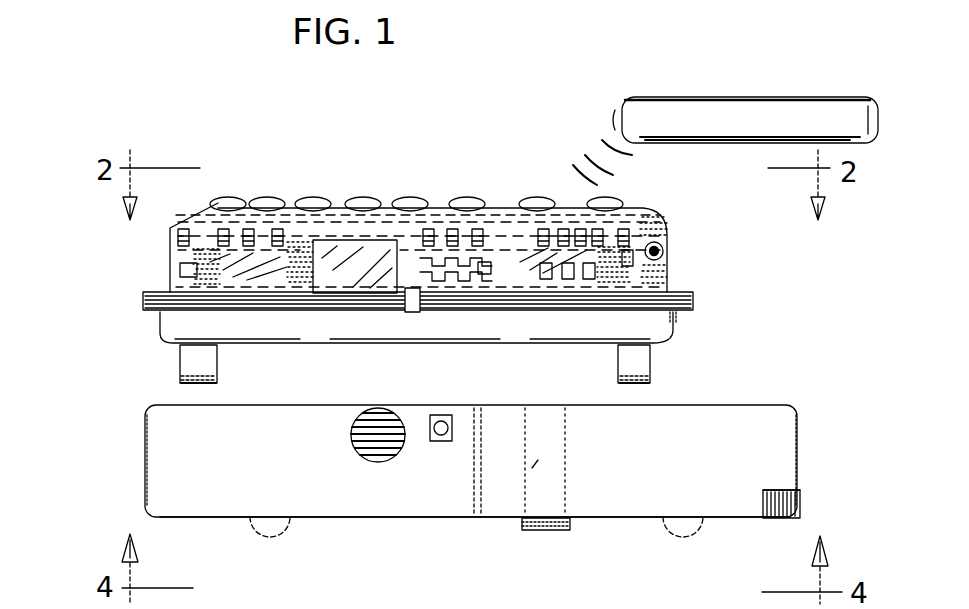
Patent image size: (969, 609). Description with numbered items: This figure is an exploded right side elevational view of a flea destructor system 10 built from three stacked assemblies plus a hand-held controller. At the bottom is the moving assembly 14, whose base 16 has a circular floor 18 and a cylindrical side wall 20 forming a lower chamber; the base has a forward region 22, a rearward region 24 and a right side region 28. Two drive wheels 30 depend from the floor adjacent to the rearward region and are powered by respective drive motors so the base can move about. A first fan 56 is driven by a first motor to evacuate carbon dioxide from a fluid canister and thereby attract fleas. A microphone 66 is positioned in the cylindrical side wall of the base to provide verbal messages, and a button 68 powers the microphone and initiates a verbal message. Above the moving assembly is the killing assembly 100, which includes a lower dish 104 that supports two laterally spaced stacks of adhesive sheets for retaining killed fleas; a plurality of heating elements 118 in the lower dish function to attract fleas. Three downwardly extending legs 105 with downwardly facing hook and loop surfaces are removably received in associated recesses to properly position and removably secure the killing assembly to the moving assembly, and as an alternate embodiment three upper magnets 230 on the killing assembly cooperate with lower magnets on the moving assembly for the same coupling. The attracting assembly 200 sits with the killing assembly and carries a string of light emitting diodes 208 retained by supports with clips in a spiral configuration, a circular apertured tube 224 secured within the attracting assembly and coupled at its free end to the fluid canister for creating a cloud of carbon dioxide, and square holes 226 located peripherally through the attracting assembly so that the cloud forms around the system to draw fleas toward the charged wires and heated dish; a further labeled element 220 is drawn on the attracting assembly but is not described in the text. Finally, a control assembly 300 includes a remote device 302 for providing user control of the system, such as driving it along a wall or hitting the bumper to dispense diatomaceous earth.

The flea destructor system 10 is at (457, 133).
The killing assembly 100 is at (682, 261).
The lower dish 104 is at (660, 343).
The downwardly extending legs 105 is at (617, 363).
The upper magnets 230 is at (617, 383).
The attracting assembly 200 is at (314, 180).
The string of light emitting diodes 208 is at (470, 210).
The tube 224 is at (310, 232).
The square holes 226 is at (477, 229).
The heating elements 118 is at (175, 273).
The button 220 is at (661, 243).
The rearward region 24 is at (145, 473).
The moving assembly 14 is at (275, 466).
The base 16 is at (662, 479).
The circular floor 18 is at (393, 518).
The microphone 66 is at (365, 459).
The button 68 is at (443, 443).
The first fan 56 is at (541, 470).
The right side region 28 is at (591, 594).
The drive wheels 30 is at (254, 522).
The cylindrical side wall 20 is at (797, 486).
The forward region 22 is at (797, 481).
The control assembly 300 is at (810, 61).
The remote device 302 is at (732, 129).